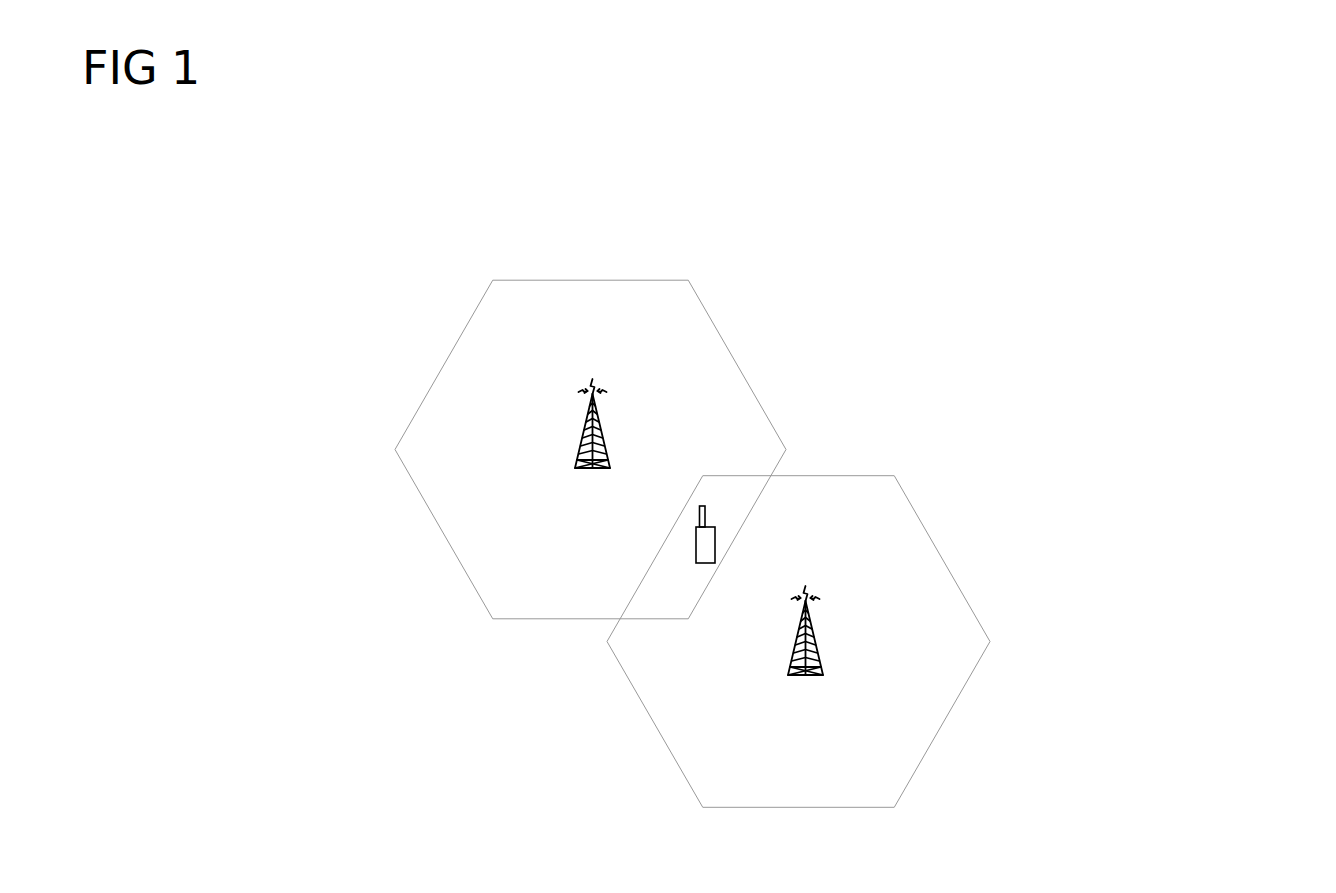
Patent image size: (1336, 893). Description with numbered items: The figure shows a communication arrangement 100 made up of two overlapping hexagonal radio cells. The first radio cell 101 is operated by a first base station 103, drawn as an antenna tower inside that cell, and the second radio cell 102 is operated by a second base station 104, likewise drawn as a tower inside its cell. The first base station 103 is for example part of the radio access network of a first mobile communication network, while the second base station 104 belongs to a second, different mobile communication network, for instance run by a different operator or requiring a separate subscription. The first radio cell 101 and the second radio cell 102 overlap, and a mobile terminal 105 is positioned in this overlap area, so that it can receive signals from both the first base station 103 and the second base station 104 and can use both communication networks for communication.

The communication arrangement 100 is at (1220, 137).
The first radio cell 101 is at (708, 315).
The second radio cell 102 is at (888, 478).
The first base station 103 is at (606, 444).
The second base station 104 is at (820, 651).
The mobile terminal 105 is at (717, 545).